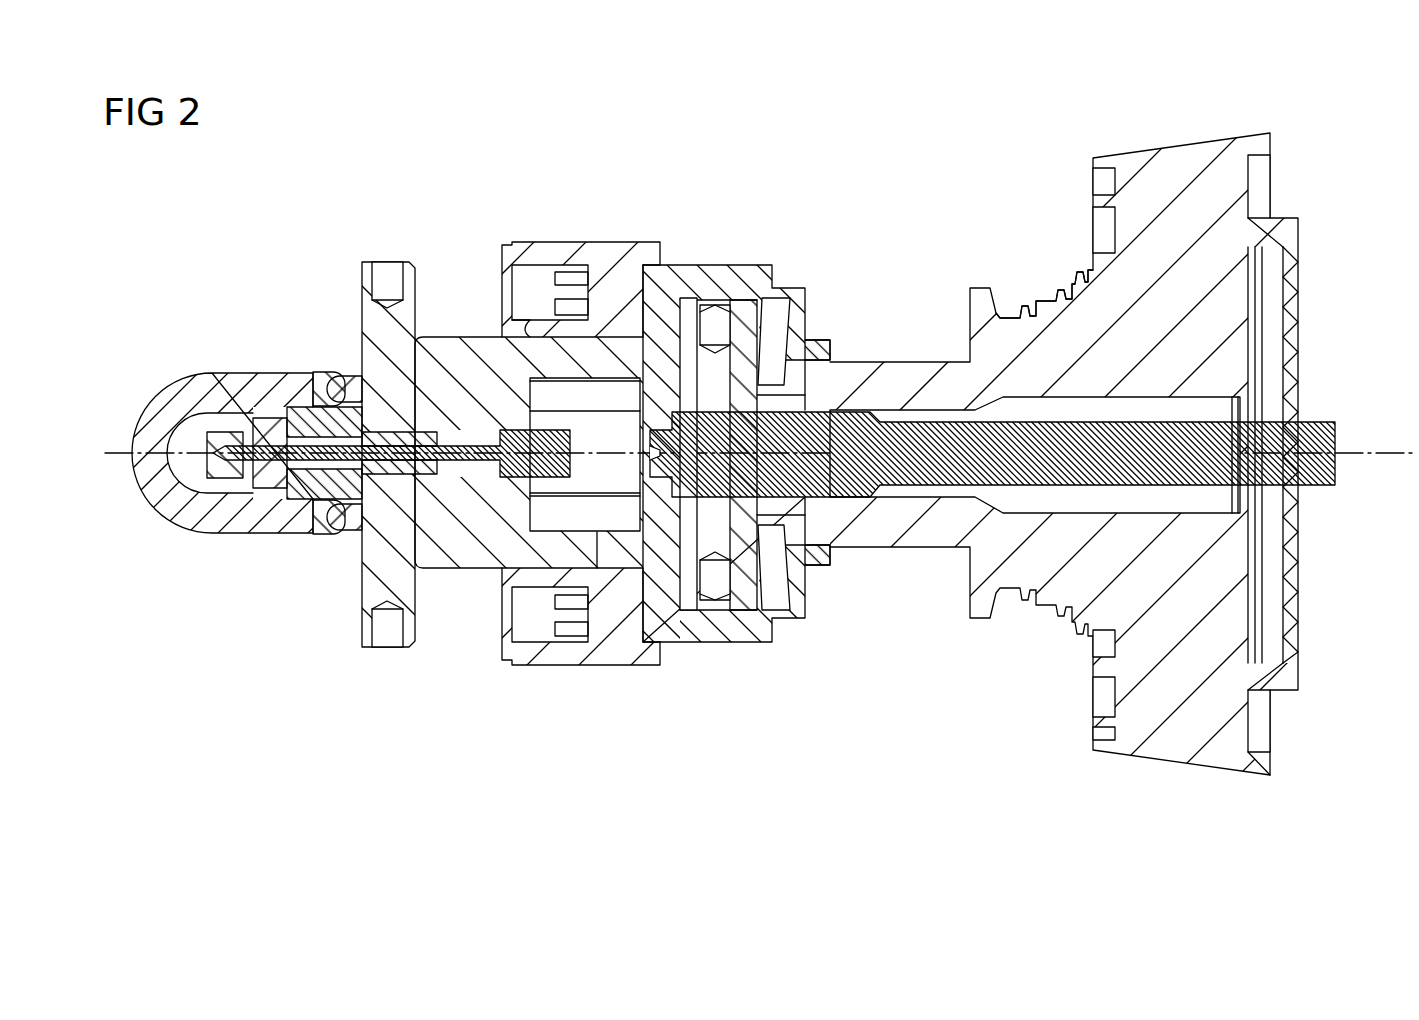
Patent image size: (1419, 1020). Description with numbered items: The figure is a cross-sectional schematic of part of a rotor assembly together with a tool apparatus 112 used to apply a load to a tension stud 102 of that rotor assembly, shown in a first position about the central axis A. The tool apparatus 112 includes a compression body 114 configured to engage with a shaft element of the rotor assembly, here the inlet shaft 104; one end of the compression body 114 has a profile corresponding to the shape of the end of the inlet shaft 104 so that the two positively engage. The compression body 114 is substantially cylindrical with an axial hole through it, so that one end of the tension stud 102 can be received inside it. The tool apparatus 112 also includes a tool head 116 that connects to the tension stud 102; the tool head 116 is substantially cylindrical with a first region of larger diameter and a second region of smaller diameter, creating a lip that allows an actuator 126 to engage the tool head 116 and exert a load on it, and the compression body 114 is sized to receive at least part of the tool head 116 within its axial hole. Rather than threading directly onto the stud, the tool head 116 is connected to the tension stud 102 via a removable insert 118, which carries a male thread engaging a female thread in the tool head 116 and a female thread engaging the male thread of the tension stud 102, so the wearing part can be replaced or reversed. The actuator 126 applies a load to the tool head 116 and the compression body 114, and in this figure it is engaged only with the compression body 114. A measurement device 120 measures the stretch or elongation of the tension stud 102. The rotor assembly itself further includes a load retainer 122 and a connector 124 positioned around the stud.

The tool apparatus 112 is at (448, 167).
The tension stud 102 is at (932, 490).
The inlet shaft 104 is at (1050, 307).
The compression body 114 is at (718, 642).
The tool head 116 is at (362, 328).
The removable insert 118 is at (542, 510).
The measurement device 120 is at (270, 427).
The load retainer 122 is at (782, 525).
The connector 124 is at (688, 308).
The actuator 126 is at (595, 667).
The axis of rotation A is at (1345, 446).